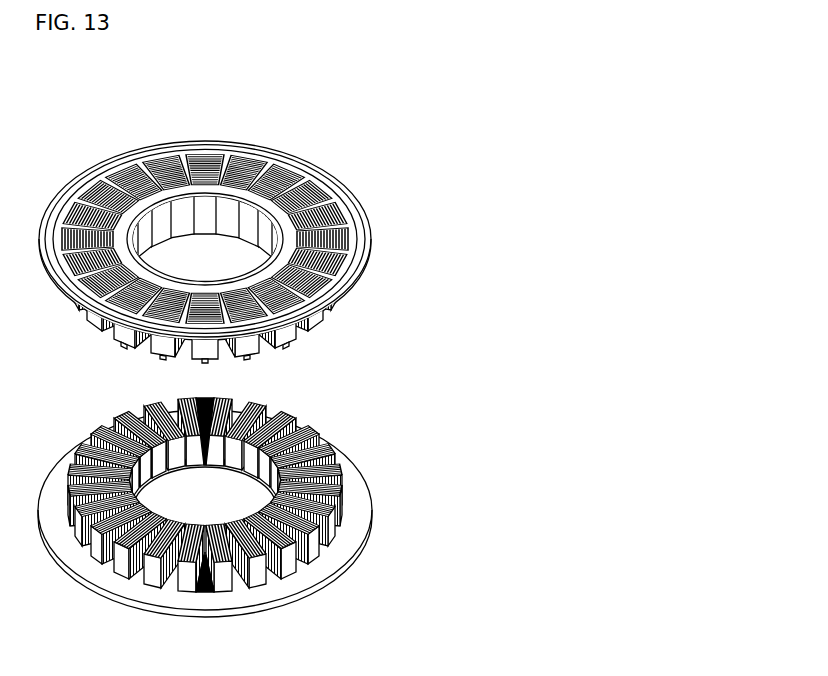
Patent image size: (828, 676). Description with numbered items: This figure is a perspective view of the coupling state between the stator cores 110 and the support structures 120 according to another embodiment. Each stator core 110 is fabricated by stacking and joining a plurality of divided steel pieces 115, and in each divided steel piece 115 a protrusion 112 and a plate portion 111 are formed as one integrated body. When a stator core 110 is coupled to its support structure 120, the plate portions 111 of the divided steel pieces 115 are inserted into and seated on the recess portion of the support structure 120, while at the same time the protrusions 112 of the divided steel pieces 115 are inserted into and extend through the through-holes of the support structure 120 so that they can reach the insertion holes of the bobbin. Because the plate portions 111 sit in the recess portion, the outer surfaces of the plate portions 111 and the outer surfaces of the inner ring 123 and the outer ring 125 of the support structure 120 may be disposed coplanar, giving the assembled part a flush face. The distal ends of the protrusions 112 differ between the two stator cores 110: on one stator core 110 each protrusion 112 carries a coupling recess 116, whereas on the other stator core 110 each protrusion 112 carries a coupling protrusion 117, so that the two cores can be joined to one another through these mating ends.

The stator core 110 is at (252, 195).
The plate portion 111 is at (345, 237).
The protrusion 112 is at (255, 411).
The divided steel piece 115 is at (283, 363).
The coupling recess 116 is at (243, 562).
The coupling protrusion 117 is at (307, 337).
The support structure 120 is at (251, 346).
The inner ring 123 is at (130, 217).
The outer ring 125 is at (343, 198).